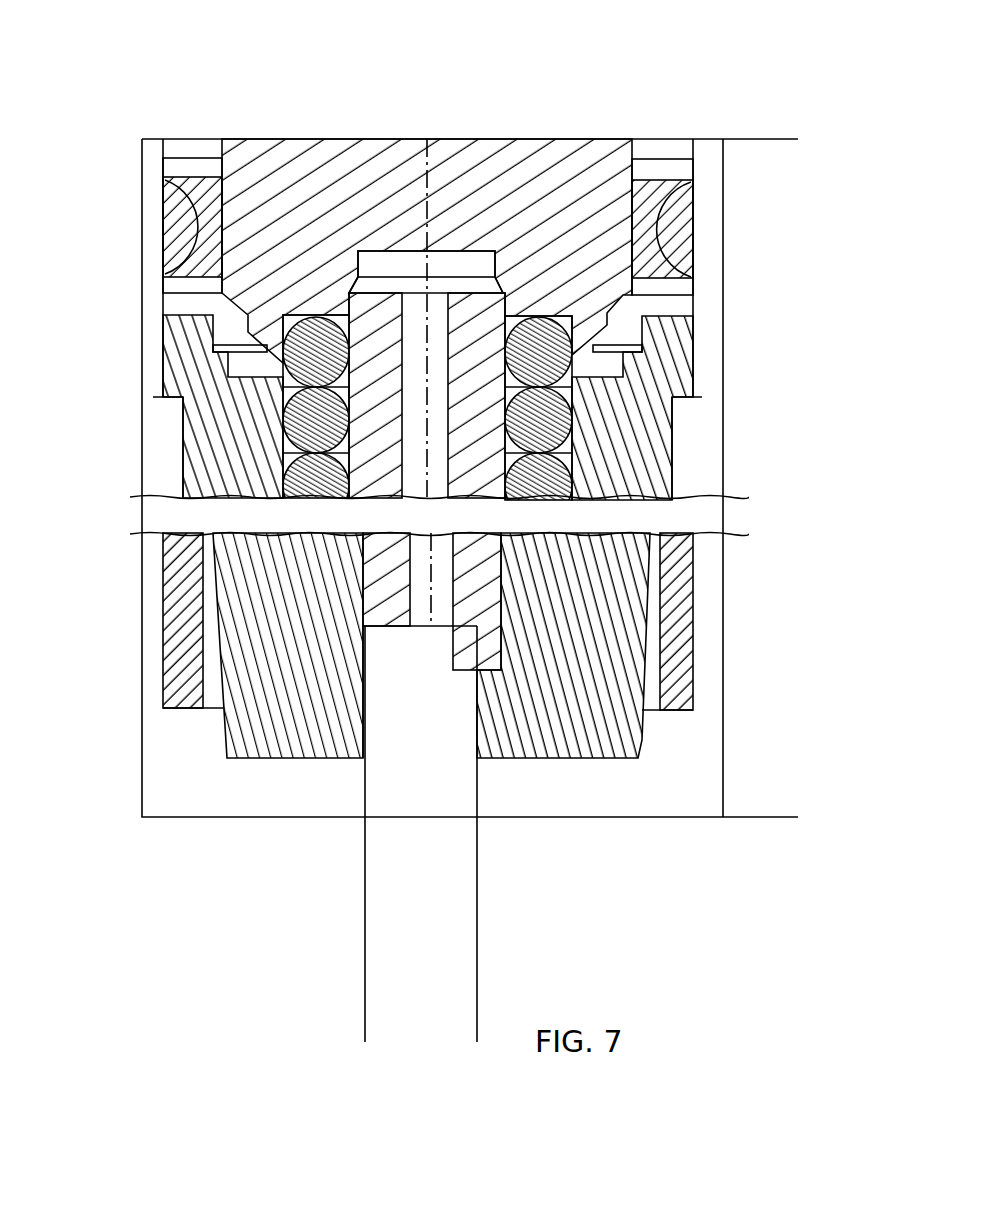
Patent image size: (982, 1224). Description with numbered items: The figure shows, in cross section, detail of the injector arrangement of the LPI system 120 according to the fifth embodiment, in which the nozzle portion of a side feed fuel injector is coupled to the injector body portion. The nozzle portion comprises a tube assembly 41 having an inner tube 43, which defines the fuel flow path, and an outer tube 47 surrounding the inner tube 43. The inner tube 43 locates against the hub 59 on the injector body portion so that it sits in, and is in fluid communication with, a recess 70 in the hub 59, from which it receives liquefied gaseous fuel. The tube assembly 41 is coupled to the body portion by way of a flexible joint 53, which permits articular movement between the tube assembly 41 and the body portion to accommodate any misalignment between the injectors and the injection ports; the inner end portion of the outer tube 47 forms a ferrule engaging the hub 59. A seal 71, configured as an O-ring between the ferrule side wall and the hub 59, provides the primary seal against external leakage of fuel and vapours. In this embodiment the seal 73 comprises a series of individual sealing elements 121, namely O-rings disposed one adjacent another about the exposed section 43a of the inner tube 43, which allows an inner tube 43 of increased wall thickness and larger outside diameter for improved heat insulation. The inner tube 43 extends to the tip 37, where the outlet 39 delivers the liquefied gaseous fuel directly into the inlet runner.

The LPI system 120 is at (221, 125).
The recess 70 is at (388, 262).
The exposed section of the inner tube 43a is at (477, 327).
The hub 59 is at (575, 182).
The seal 71 is at (667, 220).
The sealing elements 121 is at (560, 353).
The seal 73 is at (280, 368).
The flexible joint 53 is at (303, 425).
The tube assembly 41 is at (383, 585).
The inner tube 43 is at (363, 623).
The outer tube 47 is at (305, 720).
The outlet 39 is at (460, 700).
The tip 37 is at (608, 715).